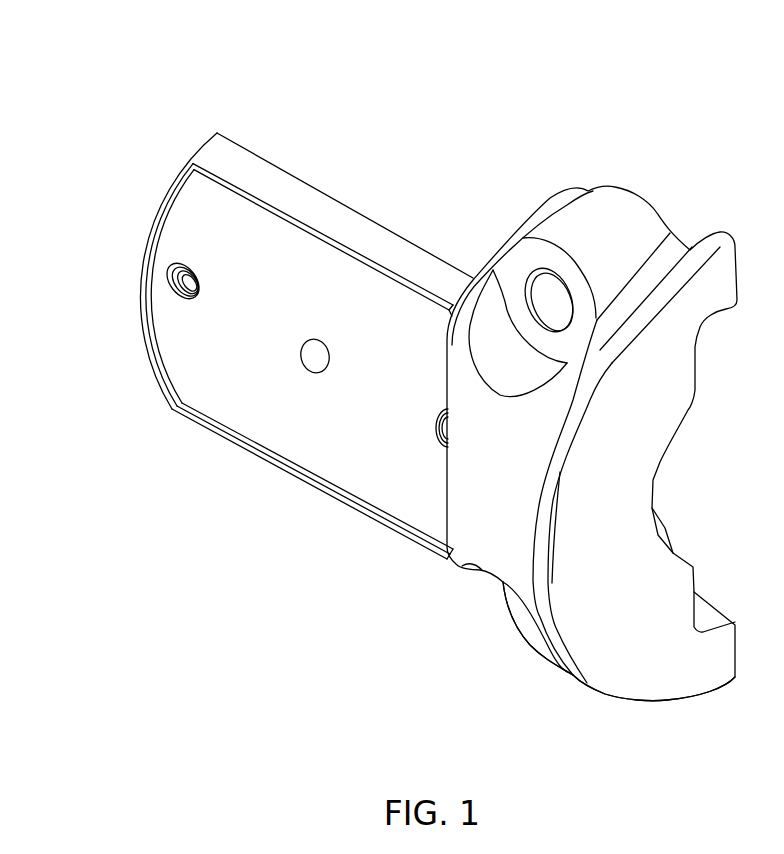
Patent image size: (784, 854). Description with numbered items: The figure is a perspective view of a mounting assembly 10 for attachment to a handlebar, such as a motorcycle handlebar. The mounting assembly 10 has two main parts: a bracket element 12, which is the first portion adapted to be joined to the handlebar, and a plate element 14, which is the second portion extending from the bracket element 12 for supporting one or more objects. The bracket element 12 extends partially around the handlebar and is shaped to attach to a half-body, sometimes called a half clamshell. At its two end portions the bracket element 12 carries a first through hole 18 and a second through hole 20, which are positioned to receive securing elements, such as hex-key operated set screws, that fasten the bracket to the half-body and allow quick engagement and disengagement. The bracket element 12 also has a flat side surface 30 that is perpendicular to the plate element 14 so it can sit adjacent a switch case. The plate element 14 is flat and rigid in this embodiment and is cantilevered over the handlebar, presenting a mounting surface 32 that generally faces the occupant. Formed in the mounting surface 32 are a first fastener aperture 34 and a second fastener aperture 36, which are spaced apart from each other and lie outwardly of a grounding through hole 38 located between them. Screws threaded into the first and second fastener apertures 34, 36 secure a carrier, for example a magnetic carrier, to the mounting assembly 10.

The mounting assembly 10 is at (268, 60).
The bracket element 12 is at (608, 710).
The plate element 14 is at (299, 481).
The first through hole 18 is at (523, 270).
The second through hole 20 is at (530, 615).
The flat side surface 30 is at (638, 667).
The mounting surface 32 is at (200, 371).
The first fastener aperture 34 is at (170, 263).
The second fastener aperture 36 is at (433, 425).
The grounding through hole 38 is at (329, 346).